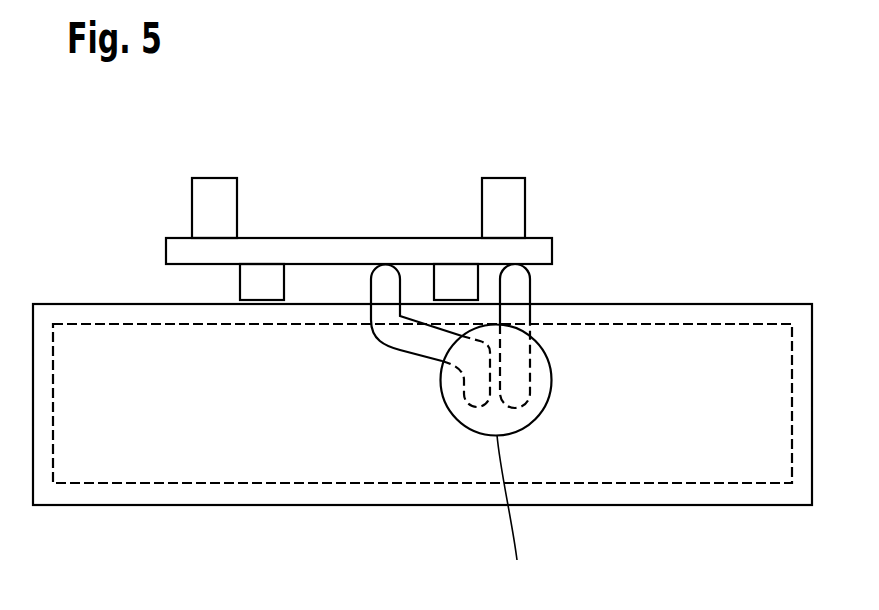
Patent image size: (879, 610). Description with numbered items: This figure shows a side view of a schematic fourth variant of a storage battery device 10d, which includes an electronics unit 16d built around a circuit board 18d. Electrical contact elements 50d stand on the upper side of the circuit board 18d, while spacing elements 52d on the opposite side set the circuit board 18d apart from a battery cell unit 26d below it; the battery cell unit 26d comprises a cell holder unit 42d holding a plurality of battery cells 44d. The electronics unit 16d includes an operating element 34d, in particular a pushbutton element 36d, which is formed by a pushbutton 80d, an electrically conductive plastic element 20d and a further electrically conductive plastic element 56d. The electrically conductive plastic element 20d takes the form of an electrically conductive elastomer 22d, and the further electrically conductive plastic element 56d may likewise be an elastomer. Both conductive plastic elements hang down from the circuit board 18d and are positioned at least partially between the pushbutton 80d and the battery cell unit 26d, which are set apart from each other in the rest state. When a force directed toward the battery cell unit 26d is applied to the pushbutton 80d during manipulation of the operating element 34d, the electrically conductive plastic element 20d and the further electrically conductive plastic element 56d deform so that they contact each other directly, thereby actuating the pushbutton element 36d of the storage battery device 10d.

The storage battery device 10d is at (603, 167).
The electronics unit 16d is at (418, 167).
The circuit board 18d is at (323, 252).
The electrically conductive plastic element 20d is at (589, 336).
The electrically conductive elastomer 22d is at (522, 287).
The battery cell unit 26d is at (647, 215).
The operating element 34d is at (466, 461).
The pushbutton element 36d is at (471, 468).
The cell holder unit 42d is at (155, 505).
The battery cells 44d is at (235, 453).
The electrical contact elements 50d is at (213, 192).
The spacing elements 52d is at (270, 278).
The further electrically conductive plastic element 56d is at (387, 278).
The pushbutton 80d is at (519, 516).